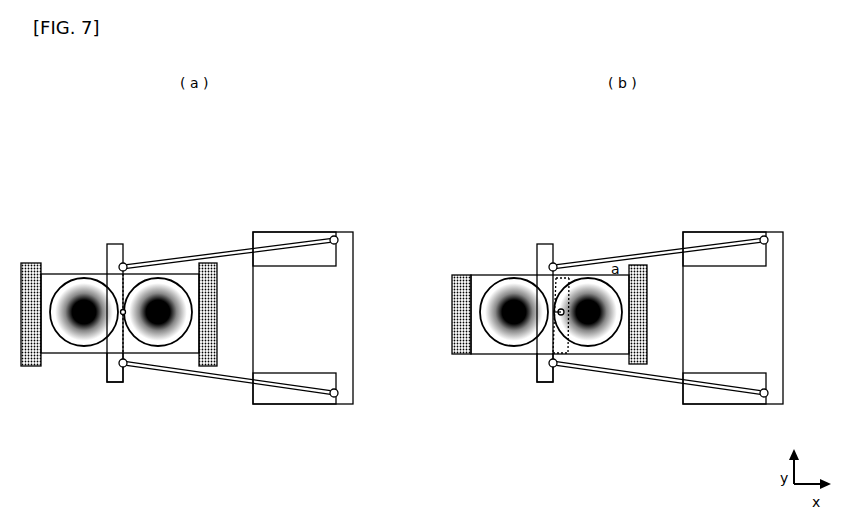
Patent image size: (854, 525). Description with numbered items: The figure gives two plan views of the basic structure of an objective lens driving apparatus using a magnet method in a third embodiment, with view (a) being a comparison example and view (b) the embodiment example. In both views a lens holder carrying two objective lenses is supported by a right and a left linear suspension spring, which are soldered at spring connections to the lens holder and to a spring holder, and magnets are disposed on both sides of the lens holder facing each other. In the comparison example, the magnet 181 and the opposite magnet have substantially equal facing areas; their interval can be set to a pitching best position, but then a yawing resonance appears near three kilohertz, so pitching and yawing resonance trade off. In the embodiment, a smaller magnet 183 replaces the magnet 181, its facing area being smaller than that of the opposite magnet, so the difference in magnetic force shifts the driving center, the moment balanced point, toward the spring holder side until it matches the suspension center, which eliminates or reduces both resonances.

The magnet 181 is at (32, 262).
The magnet (small) 183 is at (462, 274).